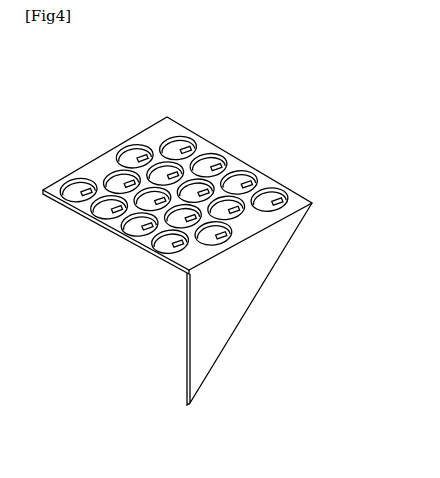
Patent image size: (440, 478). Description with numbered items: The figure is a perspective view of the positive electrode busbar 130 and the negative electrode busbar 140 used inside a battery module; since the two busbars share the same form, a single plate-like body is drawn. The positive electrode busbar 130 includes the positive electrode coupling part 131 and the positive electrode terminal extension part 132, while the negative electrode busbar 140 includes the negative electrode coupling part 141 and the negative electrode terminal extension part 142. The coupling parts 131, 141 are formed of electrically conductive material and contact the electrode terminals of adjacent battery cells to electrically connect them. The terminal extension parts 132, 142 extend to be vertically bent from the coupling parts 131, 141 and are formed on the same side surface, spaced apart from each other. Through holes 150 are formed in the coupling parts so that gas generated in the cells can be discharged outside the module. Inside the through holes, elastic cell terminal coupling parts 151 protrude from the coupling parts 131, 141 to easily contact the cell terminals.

The positive electrode busbar 130 is at (199, 231).
The negative electrode busbar 140 is at (245, 82).
The positive electrode coupling part 131 is at (167, 190).
The negative electrode coupling part 141 is at (105, 163).
The positive electrode terminal extension part 132 is at (281, 304).
The negative electrode terminal extension part 142 is at (242, 295).
The through holes 150 is at (288, 186).
The cell terminal coupling parts 151 is at (220, 163).